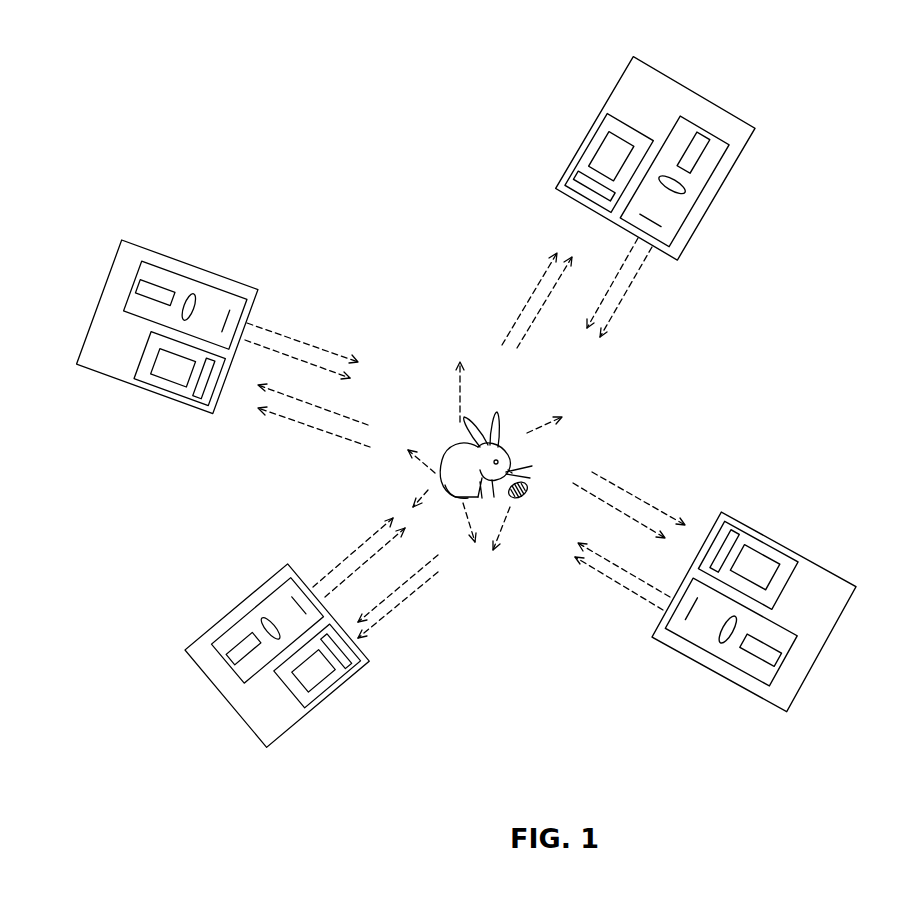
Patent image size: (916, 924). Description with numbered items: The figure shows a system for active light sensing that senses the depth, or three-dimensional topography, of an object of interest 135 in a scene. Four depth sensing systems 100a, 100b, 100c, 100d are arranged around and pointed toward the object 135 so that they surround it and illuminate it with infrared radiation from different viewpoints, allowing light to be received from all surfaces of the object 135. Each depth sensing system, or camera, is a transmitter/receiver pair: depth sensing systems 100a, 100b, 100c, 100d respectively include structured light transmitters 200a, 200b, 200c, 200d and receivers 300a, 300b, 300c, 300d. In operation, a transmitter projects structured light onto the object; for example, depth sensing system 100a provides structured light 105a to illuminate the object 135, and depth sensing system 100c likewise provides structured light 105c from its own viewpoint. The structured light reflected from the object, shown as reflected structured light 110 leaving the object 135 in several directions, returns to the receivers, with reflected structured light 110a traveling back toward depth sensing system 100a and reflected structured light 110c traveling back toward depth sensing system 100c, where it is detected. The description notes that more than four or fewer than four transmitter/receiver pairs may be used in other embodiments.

The depth sensing system 100a is at (125, 237).
The depth sensing system 100b is at (662, 72).
The depth sensing system 100c is at (835, 580).
The depth sensing system 100d is at (195, 662).
The structured light transmitter 200a is at (195, 285).
The structured light transmitter 200b is at (708, 192).
The structured light transmitter 200c is at (722, 663).
The structured light transmitter 200d is at (233, 612).
The receiver 300a is at (178, 398).
The receiver 300b is at (588, 187).
The receiver 300c is at (750, 547).
The receiver 300d is at (340, 682).
The structured light 105a is at (275, 327).
The structured light 105c is at (628, 588).
The reflected structured light 110 is at (460, 395).
The reflected structured light 110a is at (330, 433).
The reflected structured light 110c is at (640, 502).
The object 135 is at (508, 462).